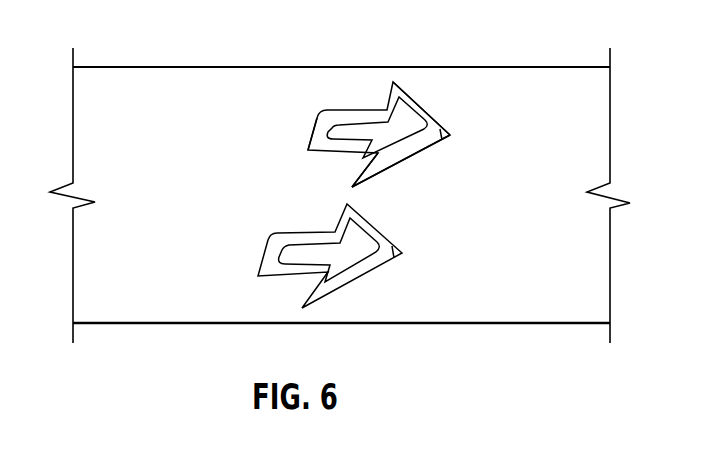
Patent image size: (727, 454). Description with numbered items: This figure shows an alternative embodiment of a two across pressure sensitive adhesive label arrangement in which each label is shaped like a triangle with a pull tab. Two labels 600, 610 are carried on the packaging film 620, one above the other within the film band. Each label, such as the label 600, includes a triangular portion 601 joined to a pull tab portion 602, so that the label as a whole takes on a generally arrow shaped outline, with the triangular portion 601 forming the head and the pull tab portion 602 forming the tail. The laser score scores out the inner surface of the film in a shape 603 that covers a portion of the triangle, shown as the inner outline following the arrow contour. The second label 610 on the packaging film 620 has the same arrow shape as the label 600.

The packaging film 620 is at (168, 84).
The label 600 is at (386, 90).
The triangular portion 601 is at (410, 157).
The pull tab portion 602 is at (444, 127).
The laser scored shape 603 is at (350, 162).
The label 610 is at (368, 275).